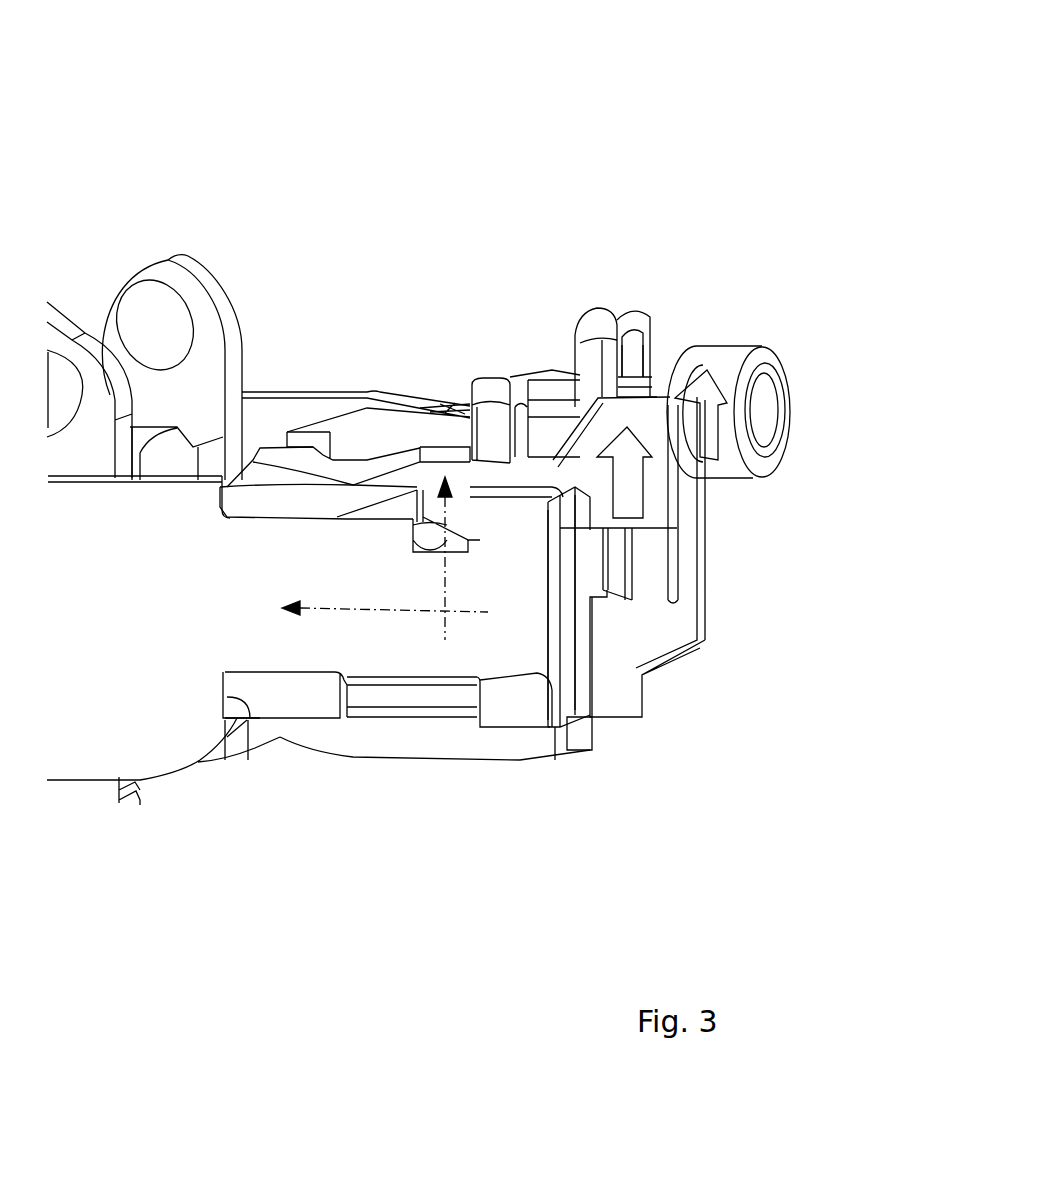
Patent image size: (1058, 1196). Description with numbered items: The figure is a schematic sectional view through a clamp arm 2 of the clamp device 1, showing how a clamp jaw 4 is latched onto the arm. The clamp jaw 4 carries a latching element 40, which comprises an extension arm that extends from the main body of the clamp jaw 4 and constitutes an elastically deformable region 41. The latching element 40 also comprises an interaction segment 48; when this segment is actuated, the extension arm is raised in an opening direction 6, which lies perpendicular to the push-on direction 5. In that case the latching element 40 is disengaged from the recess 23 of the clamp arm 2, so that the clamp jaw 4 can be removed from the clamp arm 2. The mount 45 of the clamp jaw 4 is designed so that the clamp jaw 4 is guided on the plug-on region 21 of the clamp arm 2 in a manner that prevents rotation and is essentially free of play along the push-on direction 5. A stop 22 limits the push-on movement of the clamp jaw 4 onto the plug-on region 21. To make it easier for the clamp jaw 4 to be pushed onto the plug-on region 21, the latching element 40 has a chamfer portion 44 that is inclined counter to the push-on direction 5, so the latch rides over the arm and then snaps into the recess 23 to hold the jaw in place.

The clamp device 1 is at (110, 116).
The clamp arm 2 is at (150, 685).
The clamp jaw 4 is at (496, 345).
The push-on direction 5 is at (405, 608).
The opening direction 6 is at (445, 585).
The plug-on region 21 is at (463, 628).
The stop 22 is at (249, 718).
The recess 23 is at (430, 535).
The latching element 40 is at (433, 502).
The elastically deformable region 41 is at (368, 486).
The chamfer portion 44 is at (445, 567).
The mount 45 is at (540, 676).
The interaction segment 48 is at (650, 472).